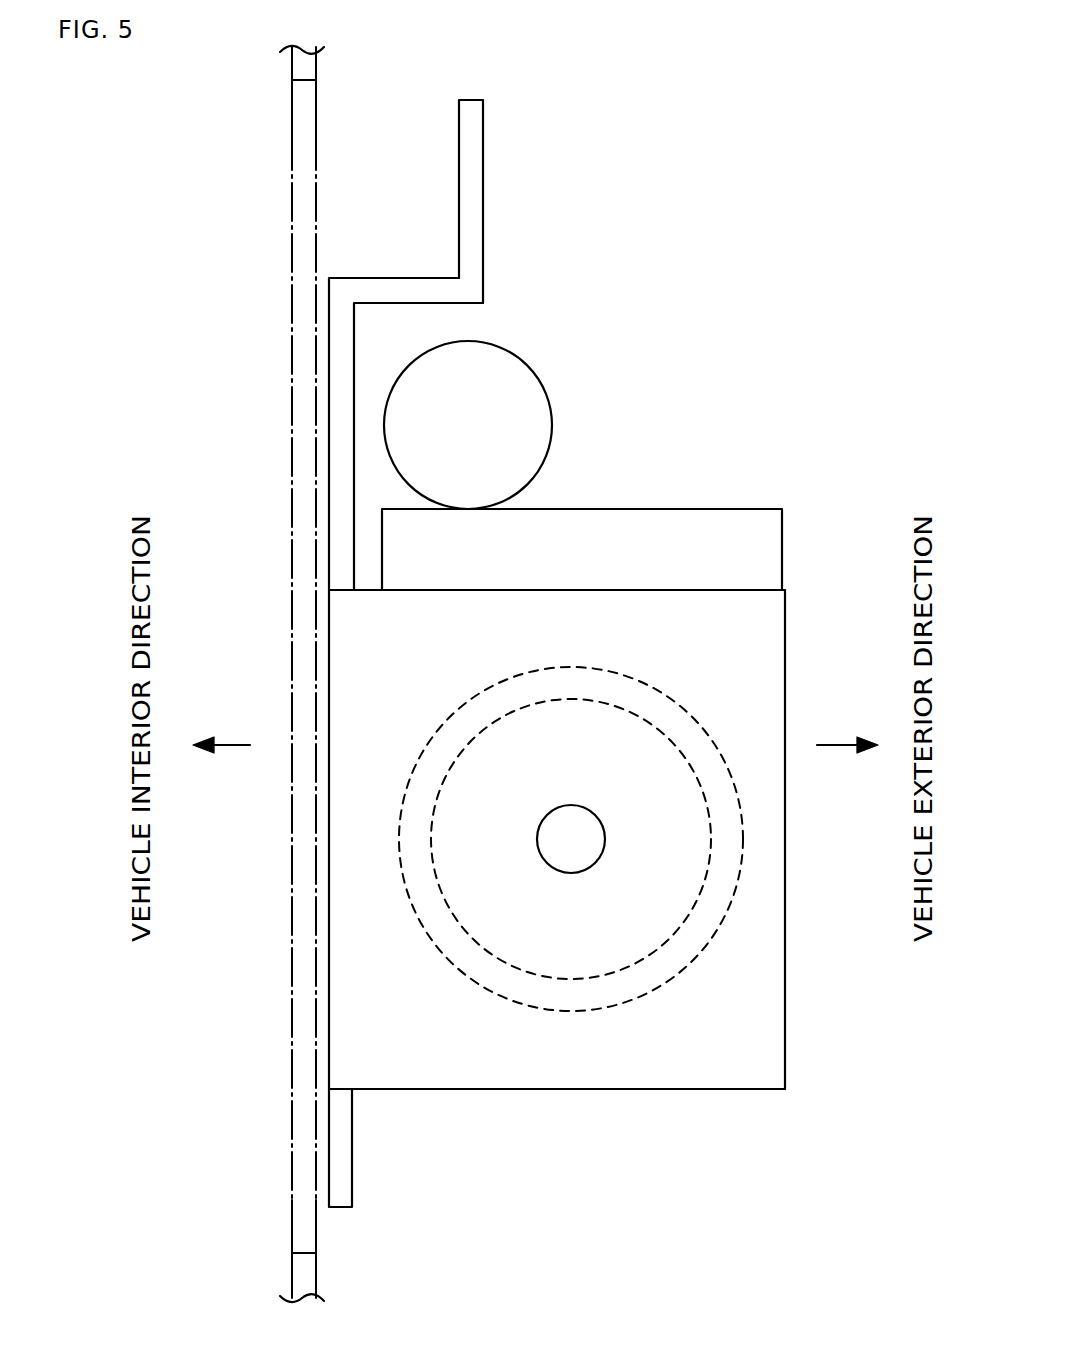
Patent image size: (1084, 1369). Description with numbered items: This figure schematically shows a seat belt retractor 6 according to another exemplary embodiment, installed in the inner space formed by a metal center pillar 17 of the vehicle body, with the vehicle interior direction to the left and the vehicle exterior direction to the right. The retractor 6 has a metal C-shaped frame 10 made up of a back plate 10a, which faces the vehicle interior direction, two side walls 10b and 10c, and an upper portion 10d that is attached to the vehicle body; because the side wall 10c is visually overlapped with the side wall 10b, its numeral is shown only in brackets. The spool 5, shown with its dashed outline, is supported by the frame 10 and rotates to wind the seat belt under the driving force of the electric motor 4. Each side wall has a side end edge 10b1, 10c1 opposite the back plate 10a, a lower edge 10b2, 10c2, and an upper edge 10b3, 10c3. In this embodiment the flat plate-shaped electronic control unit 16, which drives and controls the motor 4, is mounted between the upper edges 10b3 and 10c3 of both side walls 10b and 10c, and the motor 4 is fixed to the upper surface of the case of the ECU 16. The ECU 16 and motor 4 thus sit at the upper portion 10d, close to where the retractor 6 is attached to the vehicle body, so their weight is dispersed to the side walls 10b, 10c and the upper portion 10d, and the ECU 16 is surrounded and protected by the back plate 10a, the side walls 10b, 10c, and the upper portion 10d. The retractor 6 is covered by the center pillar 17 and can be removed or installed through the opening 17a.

The electric motor 4 is at (517, 412).
The spool 5 is at (545, 977).
The seat belt retractor 6 is at (707, 285).
The frame 10 is at (454, 653).
The back plate 10a is at (348, 1140).
The side wall 10b is at (626, 815).
The side end edge 10b1 is at (854, 839).
The lower edge 10b2 is at (577, 1142).
The upper edge 10b3 is at (587, 510).
The side wall 10c is at (626, 815).
The side end edge 10c1 is at (787, 1003).
The lower edge 10c2 is at (725, 1089).
The upper edge 10c3 is at (725, 588).
The upper portion 10d is at (478, 207).
The electronic control unit (ECU) 16 is at (636, 520).
The center pillar 17 is at (238, 674).
The opening 17a is at (308, 82).